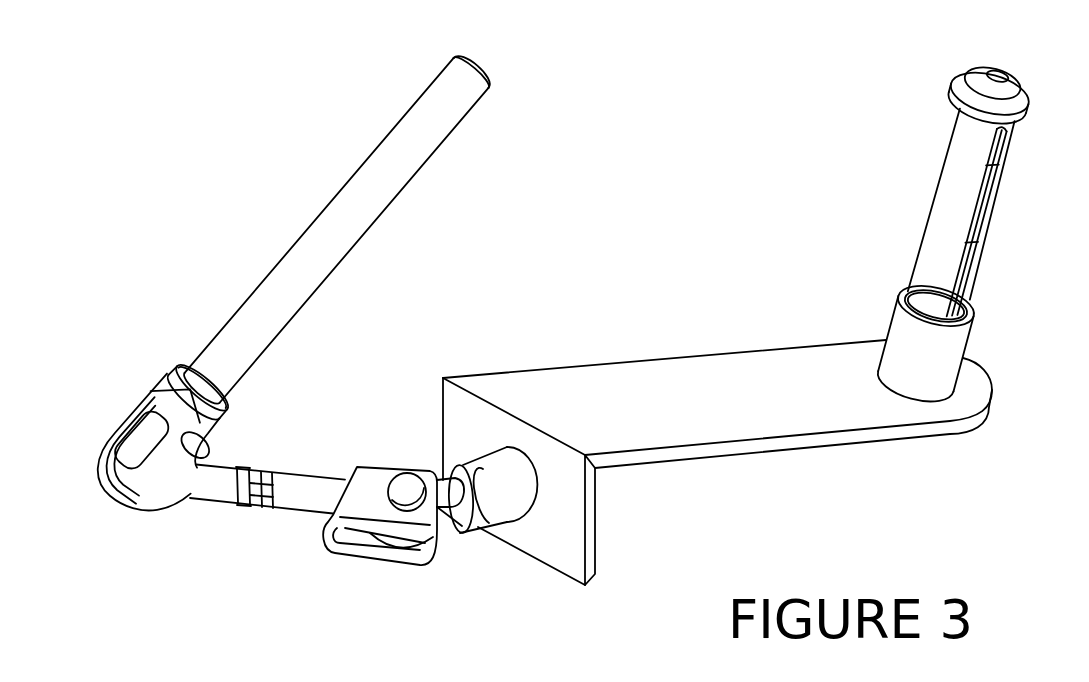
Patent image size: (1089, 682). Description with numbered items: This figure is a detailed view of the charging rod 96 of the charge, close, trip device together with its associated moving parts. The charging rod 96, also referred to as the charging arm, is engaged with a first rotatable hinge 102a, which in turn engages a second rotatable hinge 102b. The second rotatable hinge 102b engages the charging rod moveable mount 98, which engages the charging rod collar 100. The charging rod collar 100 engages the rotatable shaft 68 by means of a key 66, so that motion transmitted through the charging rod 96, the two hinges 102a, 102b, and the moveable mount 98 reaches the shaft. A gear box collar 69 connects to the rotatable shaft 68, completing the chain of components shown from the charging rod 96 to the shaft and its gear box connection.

The charging rod 96 is at (372, 190).
The charging rod moveable mount 98 is at (665, 378).
The charging rod collar 100 is at (950, 348).
The first rotatable hinge 102a is at (135, 437).
The second rotatable hinge 102b is at (407, 488).
The key 66 is at (985, 207).
The rotatable shaft 68 is at (941, 211).
The gear box collar 69 is at (997, 77).